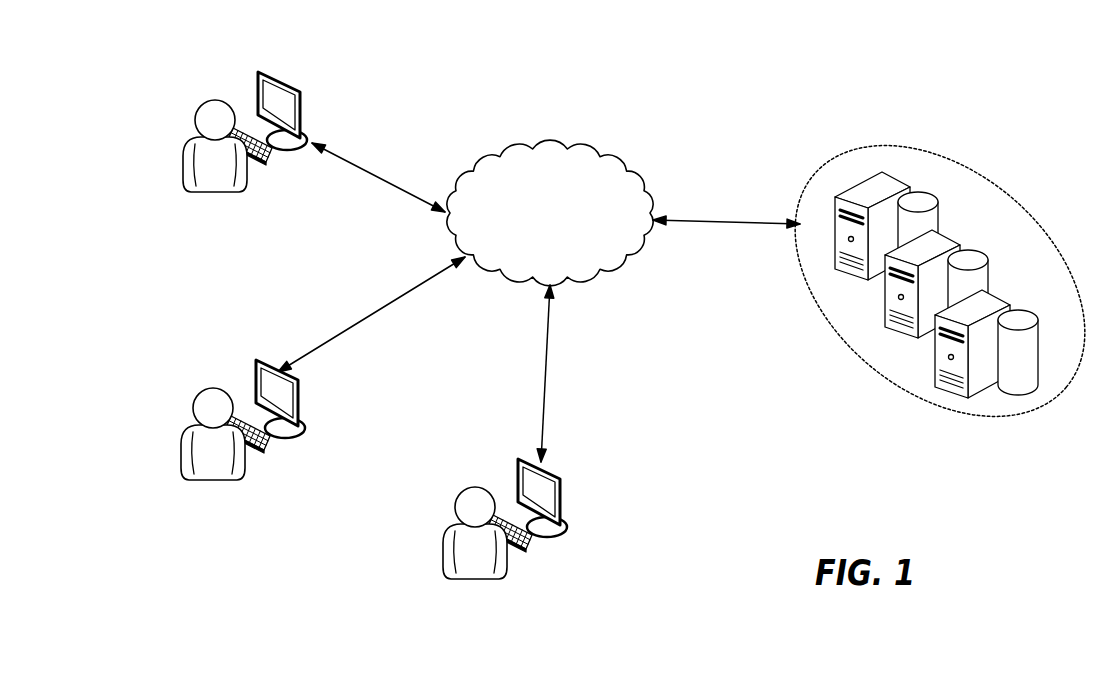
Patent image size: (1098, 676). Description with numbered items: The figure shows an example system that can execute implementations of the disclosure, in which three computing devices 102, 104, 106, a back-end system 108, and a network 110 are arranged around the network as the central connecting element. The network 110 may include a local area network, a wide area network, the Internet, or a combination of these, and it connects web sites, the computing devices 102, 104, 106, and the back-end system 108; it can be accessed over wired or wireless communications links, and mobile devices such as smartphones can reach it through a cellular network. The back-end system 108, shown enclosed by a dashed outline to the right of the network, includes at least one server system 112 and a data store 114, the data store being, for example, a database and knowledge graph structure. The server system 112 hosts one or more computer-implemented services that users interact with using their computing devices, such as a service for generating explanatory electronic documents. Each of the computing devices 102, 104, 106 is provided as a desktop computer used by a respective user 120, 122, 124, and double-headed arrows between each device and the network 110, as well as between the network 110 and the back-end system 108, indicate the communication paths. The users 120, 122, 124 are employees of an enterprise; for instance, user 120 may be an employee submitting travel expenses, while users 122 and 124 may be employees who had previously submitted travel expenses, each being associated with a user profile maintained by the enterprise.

The computing device 102 is at (306, 109).
The computing device 104 is at (311, 406).
The computing device 106 is at (574, 505).
The back-end system 108 is at (920, 281).
The network 110 is at (552, 145).
The server system 112 is at (872, 226).
The data store 114 is at (918, 234).
The user 120 is at (192, 111).
The user 122 is at (190, 401).
The user 124 is at (452, 509).